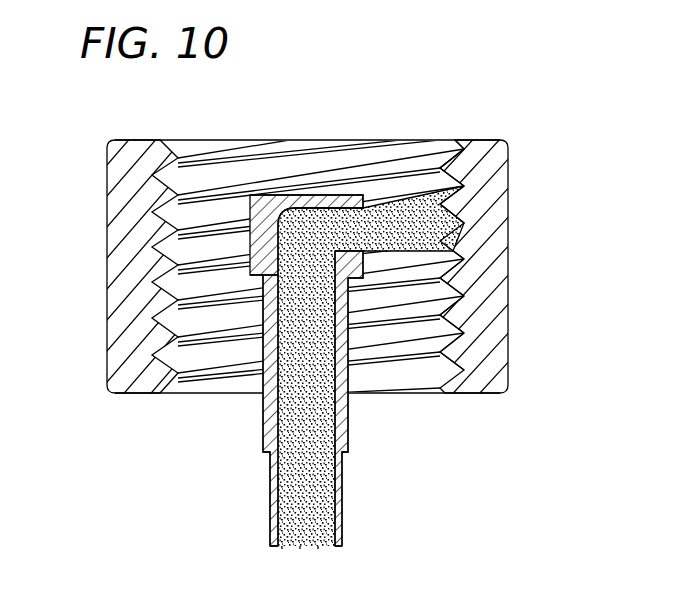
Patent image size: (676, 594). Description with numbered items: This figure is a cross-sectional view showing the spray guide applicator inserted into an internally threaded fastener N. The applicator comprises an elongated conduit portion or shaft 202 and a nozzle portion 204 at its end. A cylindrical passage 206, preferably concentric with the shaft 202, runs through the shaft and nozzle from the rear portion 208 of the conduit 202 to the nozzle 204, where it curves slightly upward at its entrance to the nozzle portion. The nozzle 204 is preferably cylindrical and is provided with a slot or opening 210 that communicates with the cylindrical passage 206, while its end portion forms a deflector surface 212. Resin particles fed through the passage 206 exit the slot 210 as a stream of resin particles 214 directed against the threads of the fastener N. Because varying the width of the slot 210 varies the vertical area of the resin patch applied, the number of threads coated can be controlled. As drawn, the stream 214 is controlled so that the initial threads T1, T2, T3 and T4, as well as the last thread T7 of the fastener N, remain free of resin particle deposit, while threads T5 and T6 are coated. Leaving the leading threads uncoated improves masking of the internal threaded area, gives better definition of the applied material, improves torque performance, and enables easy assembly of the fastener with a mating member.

The fastener N is at (105, 315).
The conduit portion or shaft 202 is at (263, 445).
The nozzle portion 204 is at (280, 211).
The cylindrical passage 206 is at (285, 406).
The rear portion 208 is at (278, 496).
The slot or opening 210 is at (293, 210).
The deflector surface 212 is at (346, 205).
The stream of resin particles 214 is at (400, 233).
The first thread T1 is at (452, 387).
The second thread T2 is at (463, 357).
The third thread T3 is at (470, 317).
The fourth thread T4 is at (470, 275).
The fifth thread T5 is at (468, 243).
The sixth thread T6 is at (456, 203).
The last thread T7 is at (466, 150).